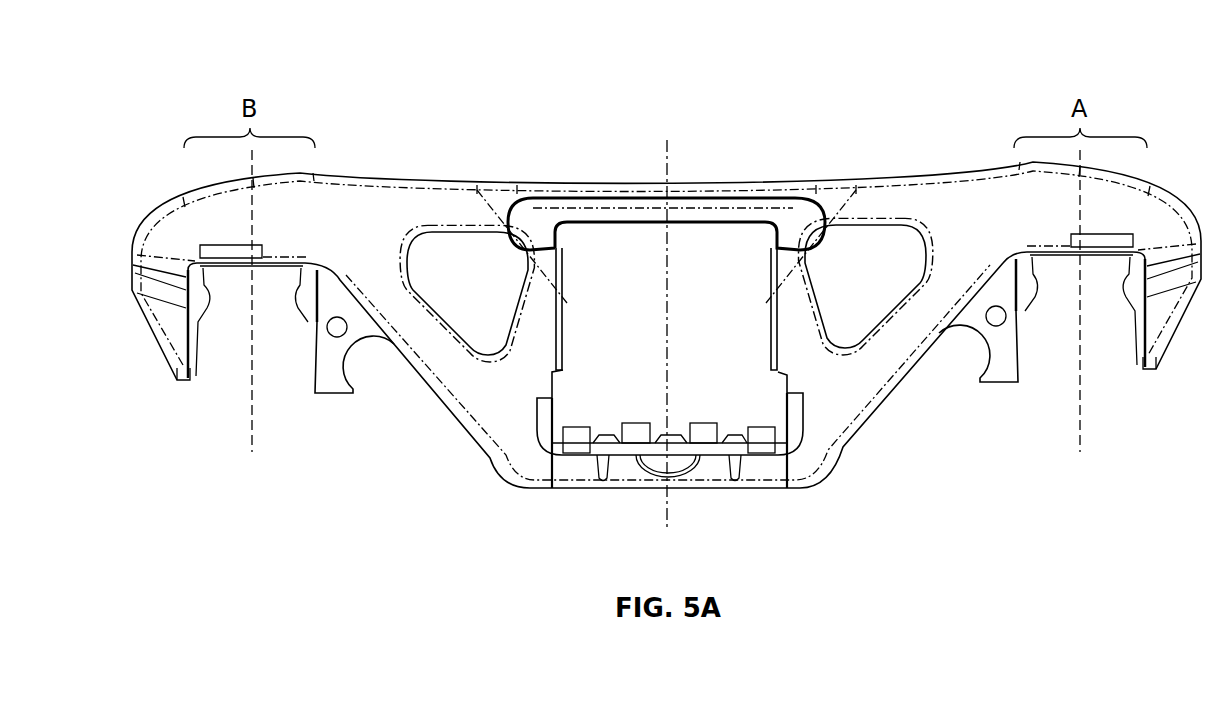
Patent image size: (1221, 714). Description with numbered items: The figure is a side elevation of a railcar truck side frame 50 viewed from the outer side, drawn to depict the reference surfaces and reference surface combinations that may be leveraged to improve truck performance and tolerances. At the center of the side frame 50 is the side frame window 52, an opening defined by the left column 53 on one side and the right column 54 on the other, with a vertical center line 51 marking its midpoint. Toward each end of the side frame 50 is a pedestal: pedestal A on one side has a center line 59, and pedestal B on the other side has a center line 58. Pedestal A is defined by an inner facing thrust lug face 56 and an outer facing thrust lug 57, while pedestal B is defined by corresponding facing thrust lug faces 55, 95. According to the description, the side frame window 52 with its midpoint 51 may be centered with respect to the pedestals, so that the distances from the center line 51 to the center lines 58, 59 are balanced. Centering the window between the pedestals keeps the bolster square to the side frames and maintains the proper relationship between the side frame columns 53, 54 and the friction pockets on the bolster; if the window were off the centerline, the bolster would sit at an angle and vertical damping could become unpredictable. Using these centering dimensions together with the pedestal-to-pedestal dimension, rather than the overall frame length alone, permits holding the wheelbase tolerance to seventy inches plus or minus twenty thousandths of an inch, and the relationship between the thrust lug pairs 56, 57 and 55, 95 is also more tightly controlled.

The side frame 50 is at (177, 72).
The center line 51 is at (668, 515).
The side frame window 52 is at (609, 274).
The left column 53 is at (563, 328).
The right column 54 is at (772, 327).
The thrust lug face 55 is at (300, 287).
The inner facing thrust lug face 56 is at (1043, 277).
The outer facing thrust lug 57 is at (1122, 273).
The center line 58 is at (252, 435).
The center line 59 is at (1080, 435).
The thrust lug face 95 is at (208, 287).